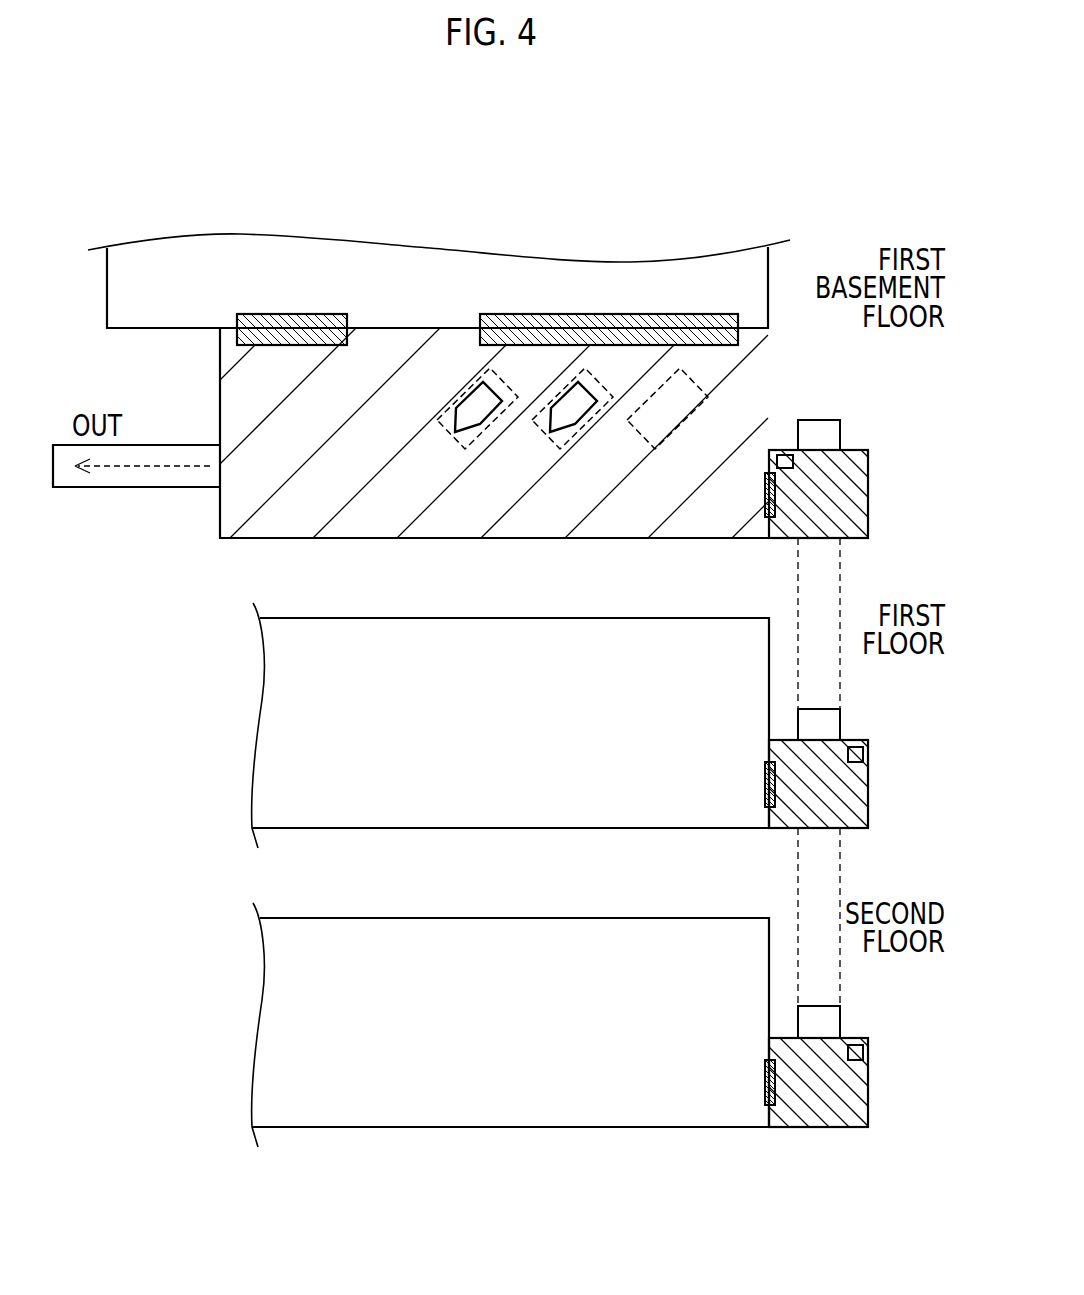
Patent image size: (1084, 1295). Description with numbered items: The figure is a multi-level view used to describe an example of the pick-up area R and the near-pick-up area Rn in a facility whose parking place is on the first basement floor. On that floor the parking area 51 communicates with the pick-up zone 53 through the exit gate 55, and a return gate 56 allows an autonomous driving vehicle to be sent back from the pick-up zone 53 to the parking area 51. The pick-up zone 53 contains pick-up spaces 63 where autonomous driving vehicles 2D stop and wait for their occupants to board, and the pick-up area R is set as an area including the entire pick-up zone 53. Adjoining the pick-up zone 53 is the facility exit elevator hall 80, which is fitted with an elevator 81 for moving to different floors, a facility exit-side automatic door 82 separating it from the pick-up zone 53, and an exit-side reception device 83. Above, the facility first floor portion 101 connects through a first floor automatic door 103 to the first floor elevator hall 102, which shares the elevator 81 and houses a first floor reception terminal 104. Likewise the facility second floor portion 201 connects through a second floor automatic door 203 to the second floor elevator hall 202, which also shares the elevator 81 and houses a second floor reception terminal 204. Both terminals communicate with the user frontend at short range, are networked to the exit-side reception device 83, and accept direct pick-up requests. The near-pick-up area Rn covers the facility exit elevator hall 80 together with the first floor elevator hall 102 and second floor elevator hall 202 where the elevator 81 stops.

The parking area 51 is at (162, 331).
The pick-up zone 53 is at (307, 541).
The exit gate 55 is at (681, 313).
The return gate 56 is at (278, 313).
The pick-up space 63 is at (564, 488).
The autonomous driving vehicle 2D is at (526, 495).
The pick-up area R is at (326, 487).
The facility exit elevator hall 80 is at (868, 493).
The elevator 81 is at (850, 726).
The facility exit-side automatic door 82 is at (764, 498).
The exit-side reception device 83 is at (784, 453).
The near-pick-up area Rn is at (814, 788).
The facility first floor portion 101 is at (524, 812).
The first floor elevator hall 102 is at (868, 779).
The first floor automatic door 103 is at (764, 770).
The first floor reception terminal 104 is at (863, 752).
The facility second floor portion 201 is at (524, 1111).
The second floor elevator hall 202 is at (868, 1077).
The second floor automatic door 203 is at (764, 1069).
The second floor reception terminal 204 is at (863, 1050).